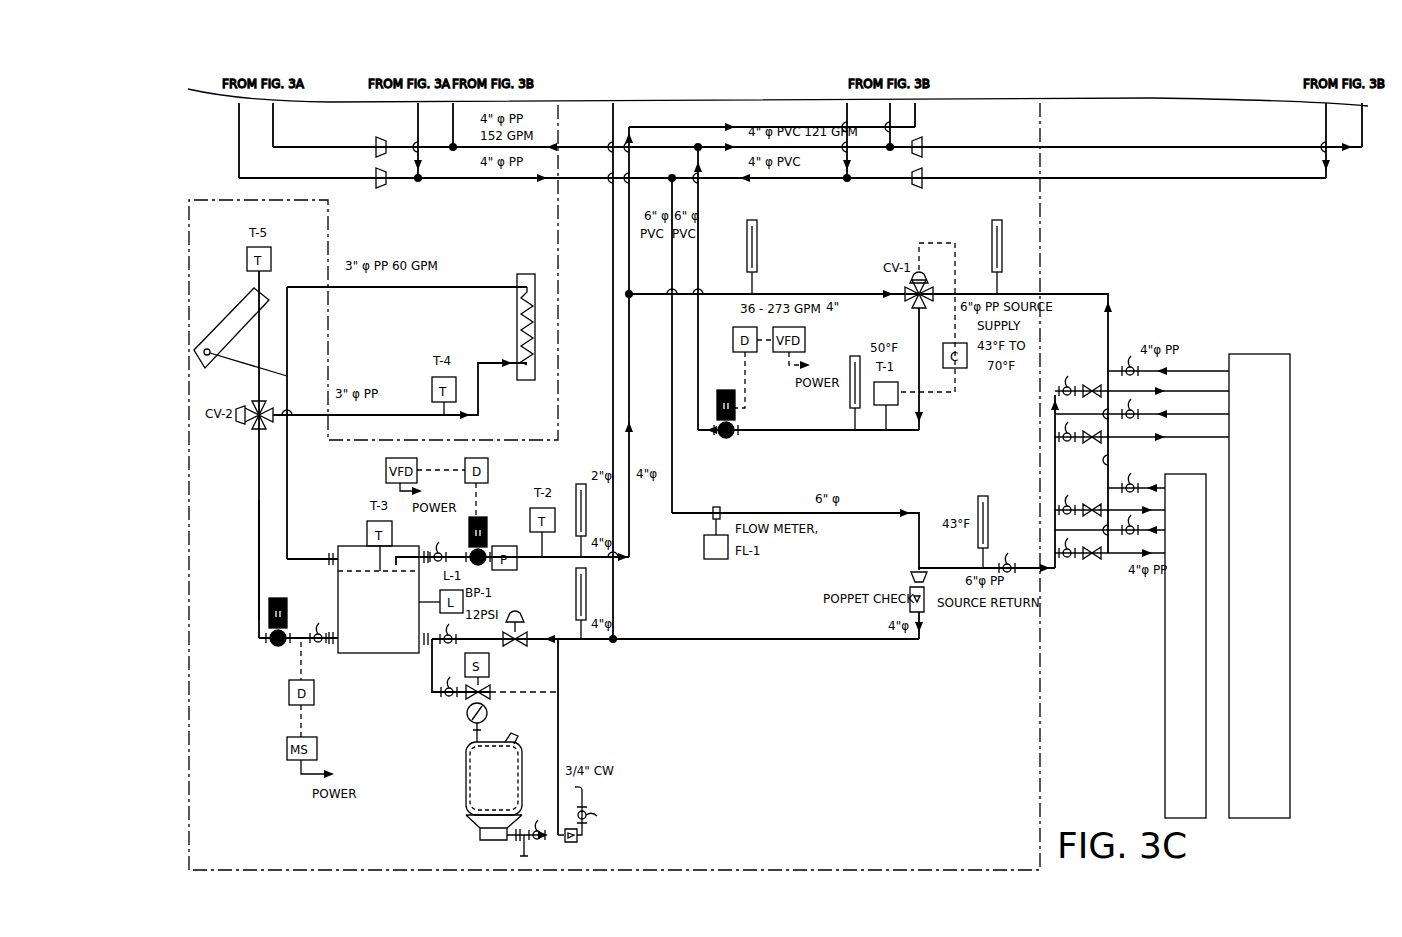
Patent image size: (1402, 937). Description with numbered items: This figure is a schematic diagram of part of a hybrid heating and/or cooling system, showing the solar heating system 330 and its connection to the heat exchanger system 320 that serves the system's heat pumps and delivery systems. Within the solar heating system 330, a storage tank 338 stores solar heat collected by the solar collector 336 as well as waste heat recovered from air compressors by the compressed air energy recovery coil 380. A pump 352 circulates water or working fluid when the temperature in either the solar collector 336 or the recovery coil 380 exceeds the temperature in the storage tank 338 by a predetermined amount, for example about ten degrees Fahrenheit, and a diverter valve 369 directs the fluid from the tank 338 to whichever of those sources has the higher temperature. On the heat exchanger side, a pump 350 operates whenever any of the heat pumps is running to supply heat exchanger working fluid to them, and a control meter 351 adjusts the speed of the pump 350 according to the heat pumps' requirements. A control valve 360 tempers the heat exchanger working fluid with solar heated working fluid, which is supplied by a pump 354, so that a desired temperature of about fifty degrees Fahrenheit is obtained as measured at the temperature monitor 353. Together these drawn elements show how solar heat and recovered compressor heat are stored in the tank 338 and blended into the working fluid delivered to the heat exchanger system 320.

The heat exchanger system 320 is at (1107, 617).
The solar heating system 330 is at (243, 561).
The solar collector 336 is at (238, 318).
The storage tank 338 is at (375, 653).
The pump 350 is at (717, 408).
The control meter 351 is at (898, 399).
The pump 352 is at (268, 618).
The temperature monitor 353 is at (744, 565).
The pump 354 is at (487, 517).
The control valve 360 is at (880, 268).
The diverter valve 369 is at (246, 425).
The compressed air energy recovery coil 380 is at (525, 273).